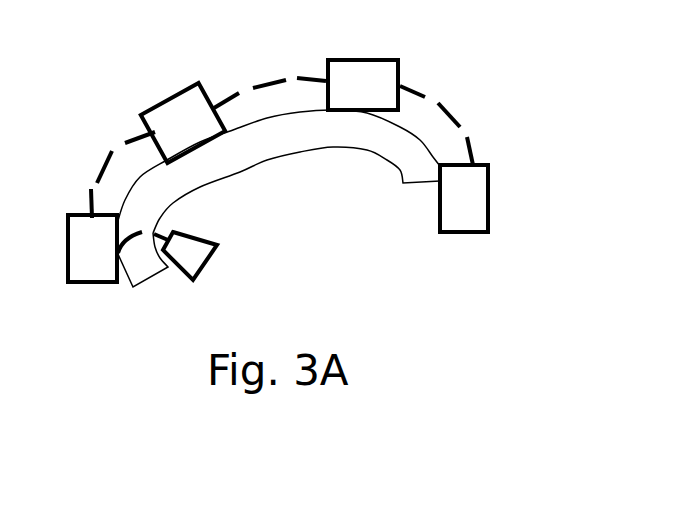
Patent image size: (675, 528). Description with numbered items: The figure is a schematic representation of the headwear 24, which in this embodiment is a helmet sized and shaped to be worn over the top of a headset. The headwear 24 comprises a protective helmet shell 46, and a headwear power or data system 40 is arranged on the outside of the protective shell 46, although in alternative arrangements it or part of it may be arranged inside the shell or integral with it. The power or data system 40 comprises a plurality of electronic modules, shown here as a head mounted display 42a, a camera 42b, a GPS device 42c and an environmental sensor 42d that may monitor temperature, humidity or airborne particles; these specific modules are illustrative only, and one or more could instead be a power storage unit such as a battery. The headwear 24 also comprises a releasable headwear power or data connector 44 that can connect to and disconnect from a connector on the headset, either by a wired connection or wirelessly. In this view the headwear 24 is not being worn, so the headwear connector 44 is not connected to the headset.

The headwear 24 is at (476, 76).
The headwear power or data system 40 is at (263, 78).
The head mounted display 42a is at (467, 203).
The camera 42b is at (363, 85).
The GPS device 42c is at (183, 123).
The environmental sensor 42d is at (93, 256).
The headwear power or data connector 44 is at (200, 235).
The protective helmet shell 46 is at (278, 198).